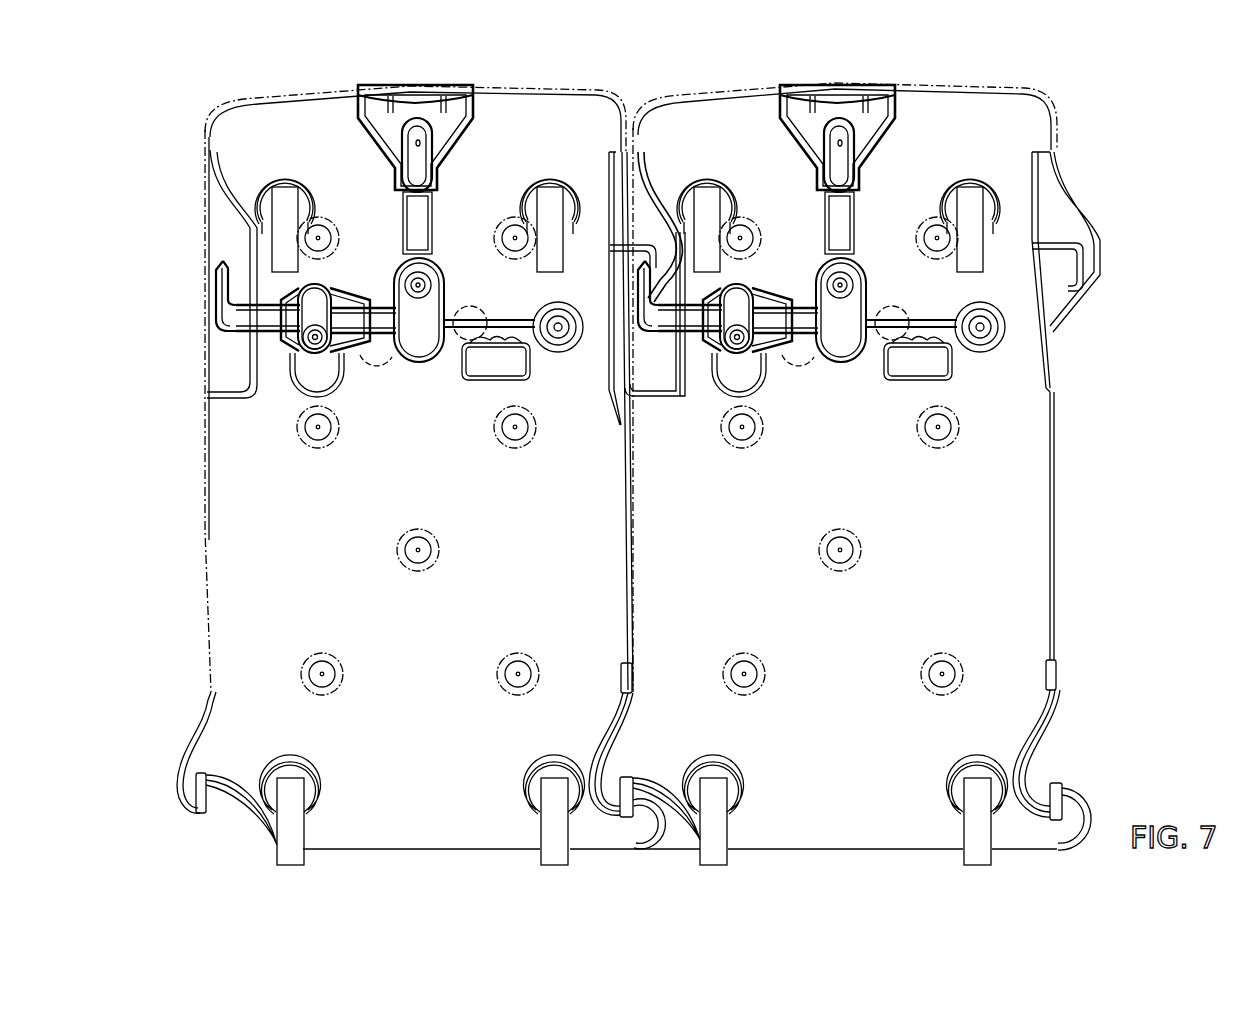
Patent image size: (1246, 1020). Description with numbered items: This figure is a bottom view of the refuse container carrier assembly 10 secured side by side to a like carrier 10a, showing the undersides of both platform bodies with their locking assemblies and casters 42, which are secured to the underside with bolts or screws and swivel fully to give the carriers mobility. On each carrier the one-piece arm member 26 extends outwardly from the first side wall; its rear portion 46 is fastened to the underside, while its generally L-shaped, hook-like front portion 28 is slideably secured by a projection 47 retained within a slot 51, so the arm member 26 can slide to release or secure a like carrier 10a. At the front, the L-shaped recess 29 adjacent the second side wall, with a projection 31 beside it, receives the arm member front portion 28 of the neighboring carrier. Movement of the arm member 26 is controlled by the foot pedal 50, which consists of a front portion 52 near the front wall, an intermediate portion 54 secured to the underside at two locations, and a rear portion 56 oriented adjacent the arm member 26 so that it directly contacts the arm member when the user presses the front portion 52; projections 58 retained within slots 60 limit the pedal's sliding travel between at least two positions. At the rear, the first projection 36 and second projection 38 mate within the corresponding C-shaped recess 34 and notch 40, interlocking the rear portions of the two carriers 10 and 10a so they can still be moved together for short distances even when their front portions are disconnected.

The refuse container carrier assembly 10 is at (565, 89).
The like carrier 10a is at (985, 85).
The arm member 26 is at (375, 360).
The arm member front portion 28 is at (660, 380).
The L shaped recess 29 is at (642, 373).
The projection 31 is at (655, 230).
The C shaped recess 34 is at (600, 815).
The first projection 36 is at (652, 851).
The second projection 38 is at (173, 777).
The notch or recess 40 is at (233, 815).
The casters 42 is at (240, 215).
The arm member rear portion 46 is at (445, 362).
The projection 47 is at (308, 366).
The foot pedal 50 is at (415, 85).
The slot 51 is at (316, 286).
The foot pedal front portion 52 is at (462, 90).
The foot pedal intermediate portion 54 is at (433, 218).
The foot pedal rear portion 56 is at (435, 310).
The projections 58 is at (425, 278).
The slots 60 is at (405, 268).